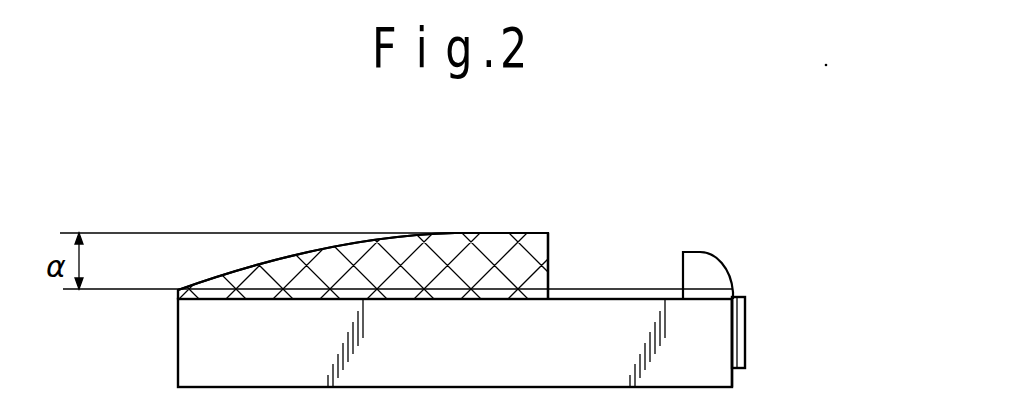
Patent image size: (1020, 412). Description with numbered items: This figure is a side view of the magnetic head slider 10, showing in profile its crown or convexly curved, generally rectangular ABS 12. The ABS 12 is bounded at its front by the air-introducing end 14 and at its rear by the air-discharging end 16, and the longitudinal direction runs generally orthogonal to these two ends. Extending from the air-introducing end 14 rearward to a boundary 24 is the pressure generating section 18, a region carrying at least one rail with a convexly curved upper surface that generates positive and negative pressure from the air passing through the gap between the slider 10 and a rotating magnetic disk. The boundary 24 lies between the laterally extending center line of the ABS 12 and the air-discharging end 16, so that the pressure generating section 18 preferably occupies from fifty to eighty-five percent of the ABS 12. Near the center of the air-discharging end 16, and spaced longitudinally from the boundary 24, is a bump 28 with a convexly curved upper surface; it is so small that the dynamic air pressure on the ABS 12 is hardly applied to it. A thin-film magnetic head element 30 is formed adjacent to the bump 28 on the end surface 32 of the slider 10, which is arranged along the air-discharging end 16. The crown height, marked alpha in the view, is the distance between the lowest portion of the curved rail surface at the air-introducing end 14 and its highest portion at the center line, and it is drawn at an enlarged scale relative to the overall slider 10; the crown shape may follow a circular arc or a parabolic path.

The magnetic head slider 10 is at (521, 214).
The ABS 12 is at (394, 231).
The front air-introducing end 14 is at (176, 294).
The rear air-discharging end 16 is at (735, 292).
The pressure generating section 18 is at (335, 260).
The boundary 24 is at (548, 263).
The bump 28 is at (695, 263).
The thin-film magnetic head element 30 is at (750, 300).
The end surface 32 is at (736, 337).